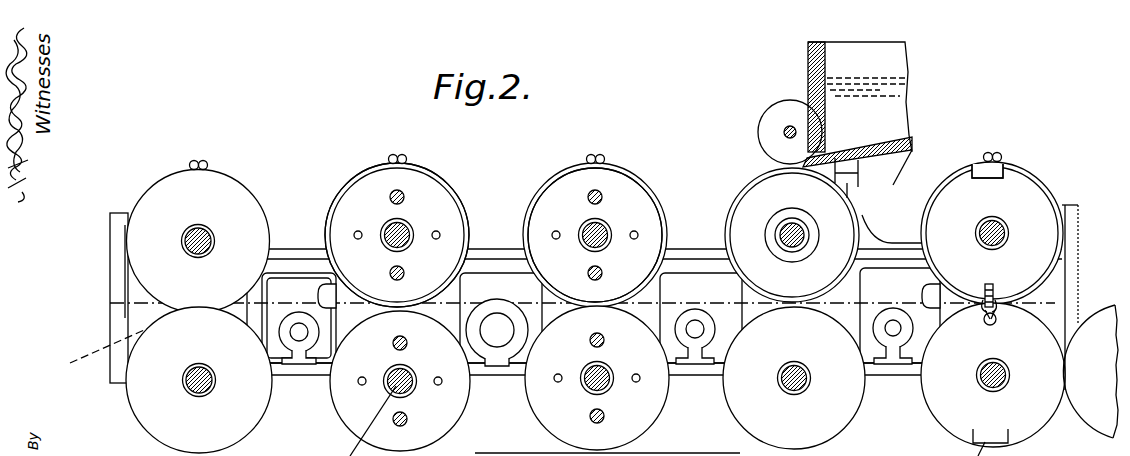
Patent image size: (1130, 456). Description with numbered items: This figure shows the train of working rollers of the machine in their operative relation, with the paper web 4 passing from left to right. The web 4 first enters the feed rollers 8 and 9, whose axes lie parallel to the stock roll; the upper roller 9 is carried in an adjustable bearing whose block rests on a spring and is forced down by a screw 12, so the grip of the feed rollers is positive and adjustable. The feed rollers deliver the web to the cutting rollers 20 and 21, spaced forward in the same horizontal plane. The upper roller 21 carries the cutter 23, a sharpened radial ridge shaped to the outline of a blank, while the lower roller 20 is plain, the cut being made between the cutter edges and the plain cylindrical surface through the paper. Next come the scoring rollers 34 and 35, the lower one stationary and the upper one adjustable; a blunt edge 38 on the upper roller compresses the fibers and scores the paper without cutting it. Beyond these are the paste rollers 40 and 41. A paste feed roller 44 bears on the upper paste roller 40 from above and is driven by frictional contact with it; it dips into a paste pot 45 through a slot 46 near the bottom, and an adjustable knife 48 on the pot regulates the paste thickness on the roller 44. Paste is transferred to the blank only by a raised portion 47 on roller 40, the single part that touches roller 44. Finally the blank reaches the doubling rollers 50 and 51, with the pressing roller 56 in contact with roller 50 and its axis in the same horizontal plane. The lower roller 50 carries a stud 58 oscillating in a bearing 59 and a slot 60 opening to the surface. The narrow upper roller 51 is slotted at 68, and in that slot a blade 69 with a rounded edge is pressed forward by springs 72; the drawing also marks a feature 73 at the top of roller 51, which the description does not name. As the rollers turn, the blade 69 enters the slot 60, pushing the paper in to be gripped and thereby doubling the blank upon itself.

The web 4 is at (104, 353).
The feed roller 8 is at (140, 418).
The feed roller 9 is at (148, 191).
The screw 12 is at (200, 161).
The cutting roller 20 is at (340, 415).
The cutting roller 21 is at (437, 190).
The cutter 23 is at (464, 206).
The scoring roller 34 is at (532, 413).
The scoring roller 35 is at (648, 220).
The blunt edge 38 is at (632, 182).
The paste roller 40 is at (762, 187).
The paste roller 41 is at (737, 408).
The paste feed roller 44 is at (764, 117).
The paste pot 45 is at (887, 72).
The slot 46 is at (830, 142).
The raised portion 47 is at (855, 196).
The adjustable knife 48 is at (896, 160).
The doubling roller 50 is at (945, 425).
The doubling roller 51 is at (1045, 185).
The pressing roller 56 is at (1086, 418).
The stud 58 is at (985, 318).
The bearing 59 is at (988, 325).
The slot 60 is at (996, 320).
The slot 68 is at (990, 286).
The blade 69 is at (997, 294).
The springs 72 is at (984, 294).
The cylinder slot 73 is at (976, 167).